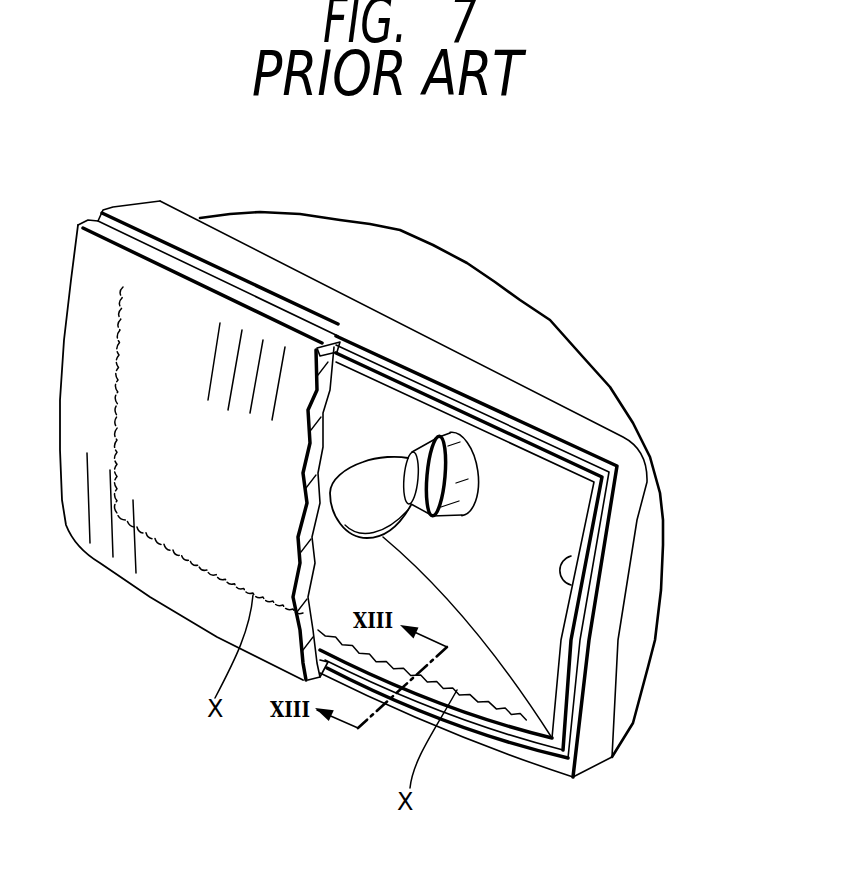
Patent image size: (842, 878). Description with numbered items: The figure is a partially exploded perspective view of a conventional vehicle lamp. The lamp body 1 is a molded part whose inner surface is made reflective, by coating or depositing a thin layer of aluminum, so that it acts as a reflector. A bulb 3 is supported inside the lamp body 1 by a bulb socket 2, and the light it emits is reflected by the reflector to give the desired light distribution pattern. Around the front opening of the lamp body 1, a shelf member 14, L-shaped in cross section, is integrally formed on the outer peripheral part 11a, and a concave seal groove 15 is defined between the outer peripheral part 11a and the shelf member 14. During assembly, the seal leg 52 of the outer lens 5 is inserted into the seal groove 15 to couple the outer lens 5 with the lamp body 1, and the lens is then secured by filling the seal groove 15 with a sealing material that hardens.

The lamp body 1 is at (443, 287).
The bulb socket 2 is at (465, 467).
The bulb 3 is at (363, 477).
The outer lens 5 is at (170, 588).
The outer peripheral part 11a is at (571, 556).
The shelf member 14 is at (597, 740).
The seal groove 15 is at (575, 680).
The seal leg 52 is at (338, 340).